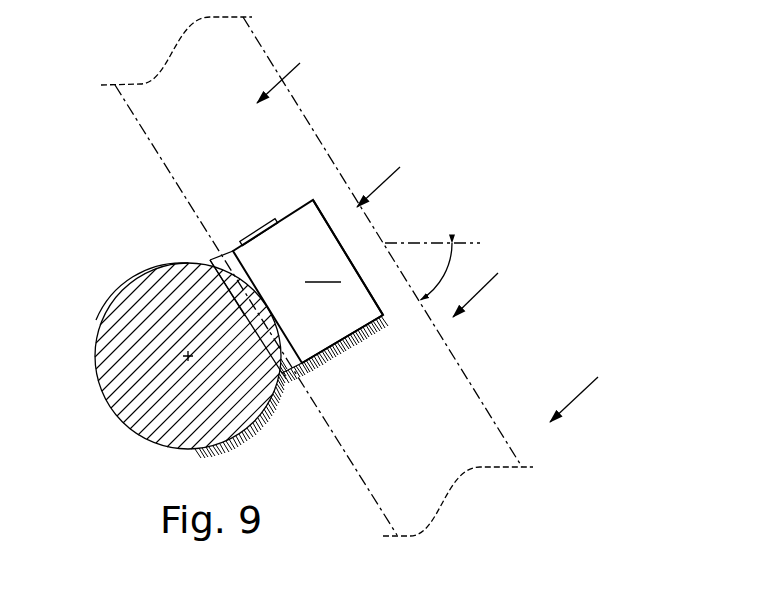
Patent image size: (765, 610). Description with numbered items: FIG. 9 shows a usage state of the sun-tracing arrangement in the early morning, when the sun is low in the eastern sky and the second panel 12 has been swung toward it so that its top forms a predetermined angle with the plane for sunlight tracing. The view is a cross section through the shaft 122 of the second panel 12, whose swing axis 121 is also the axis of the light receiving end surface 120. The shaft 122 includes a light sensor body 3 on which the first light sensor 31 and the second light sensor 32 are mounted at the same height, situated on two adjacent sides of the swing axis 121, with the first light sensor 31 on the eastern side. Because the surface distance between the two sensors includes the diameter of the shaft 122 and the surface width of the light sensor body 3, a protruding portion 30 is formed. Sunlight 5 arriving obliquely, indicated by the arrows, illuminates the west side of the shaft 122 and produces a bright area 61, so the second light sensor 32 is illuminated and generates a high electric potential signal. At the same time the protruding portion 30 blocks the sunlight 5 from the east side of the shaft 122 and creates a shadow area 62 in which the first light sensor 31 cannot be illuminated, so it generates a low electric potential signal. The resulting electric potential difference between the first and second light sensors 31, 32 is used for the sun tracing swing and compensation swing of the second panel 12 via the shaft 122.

The light sensor body 3 is at (231, 238).
The sunlight 5 is at (287, 62).
The second panel 12 is at (487, 408).
The protruding portion 30 is at (308, 281).
The first light sensor 31 is at (328, 353).
The second light sensor 32 is at (254, 228).
The bright area 61 is at (196, 239).
The shadow area 62 is at (292, 406).
The light receiving end surface 120 is at (326, 204).
The swing axis 121 is at (186, 355).
The shaft 122 is at (127, 285).